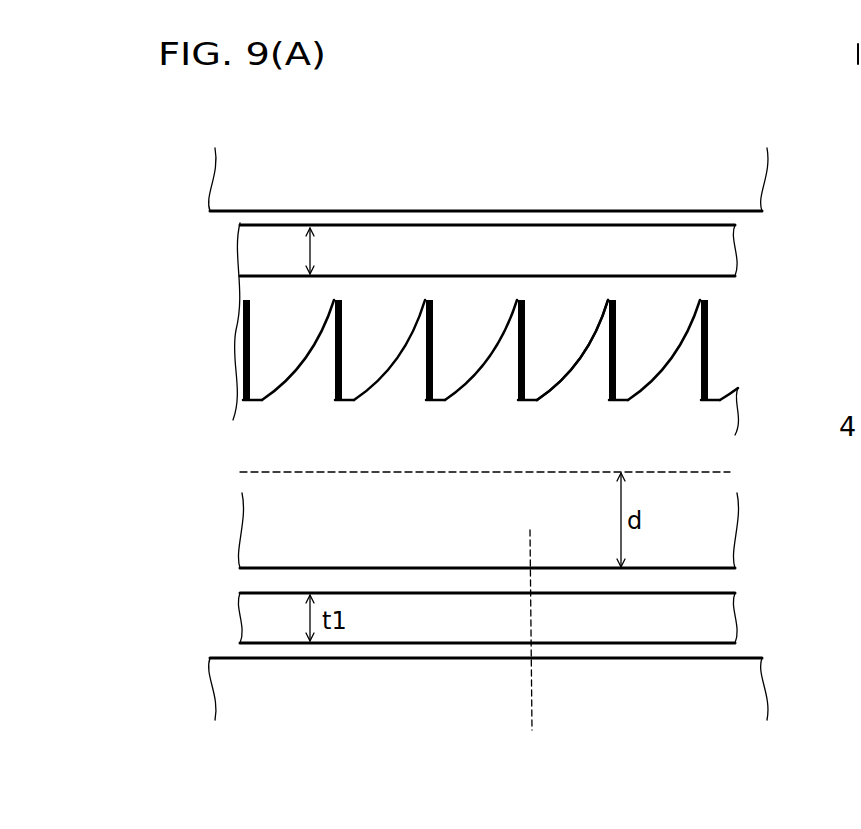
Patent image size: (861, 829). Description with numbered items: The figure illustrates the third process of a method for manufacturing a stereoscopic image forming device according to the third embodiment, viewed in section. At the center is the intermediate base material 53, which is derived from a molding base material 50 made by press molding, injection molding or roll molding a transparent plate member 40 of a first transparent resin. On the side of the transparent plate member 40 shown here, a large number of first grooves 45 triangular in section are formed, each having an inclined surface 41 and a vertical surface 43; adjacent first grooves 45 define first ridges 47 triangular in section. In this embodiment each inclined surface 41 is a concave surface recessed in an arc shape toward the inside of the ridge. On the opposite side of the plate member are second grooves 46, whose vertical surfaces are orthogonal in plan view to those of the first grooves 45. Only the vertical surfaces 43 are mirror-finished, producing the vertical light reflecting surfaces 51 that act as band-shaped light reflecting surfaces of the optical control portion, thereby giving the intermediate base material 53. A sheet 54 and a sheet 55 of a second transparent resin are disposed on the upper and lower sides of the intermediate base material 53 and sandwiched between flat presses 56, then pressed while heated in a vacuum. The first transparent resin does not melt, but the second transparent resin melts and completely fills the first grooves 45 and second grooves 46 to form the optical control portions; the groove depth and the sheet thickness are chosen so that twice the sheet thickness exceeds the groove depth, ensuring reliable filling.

The transparent plate member 40 is at (528, 271).
The inclined surface 41 is at (558, 380).
The vertical surface 43 is at (523, 350).
The first groove 45 is at (373, 330).
The second groove 46 is at (530, 645).
The first ridge 47 is at (426, 333).
The molding base material 50 is at (718, 536).
The vertical light reflecting surface 51 is at (620, 333).
The intermediate base material 53 is at (528, 264).
The sheet 54 is at (285, 245).
The sheet 55 is at (405, 615).
The flat press 56 is at (229, 212).